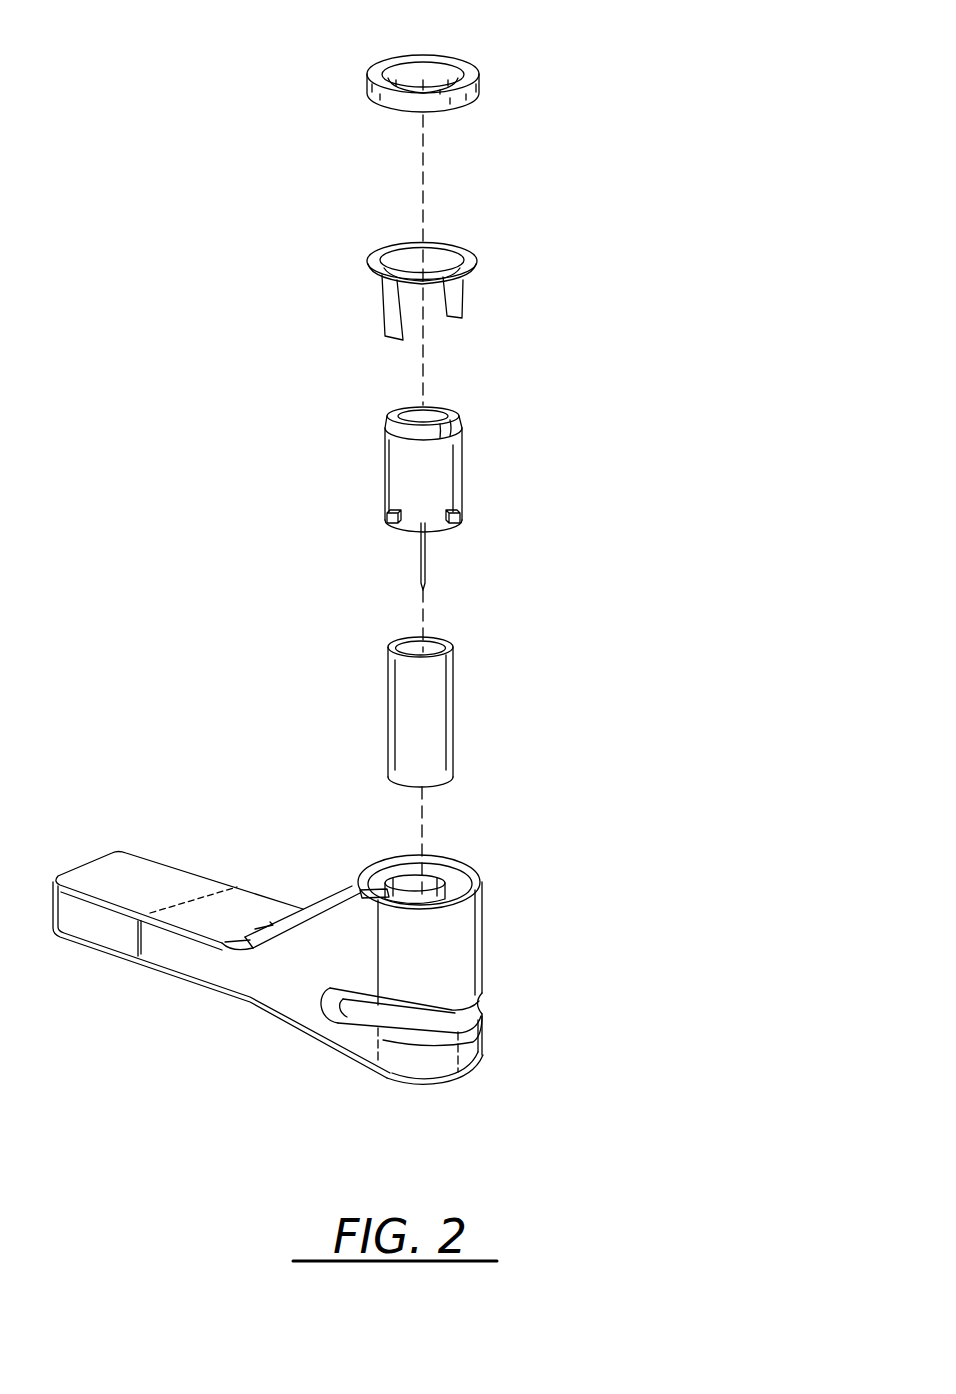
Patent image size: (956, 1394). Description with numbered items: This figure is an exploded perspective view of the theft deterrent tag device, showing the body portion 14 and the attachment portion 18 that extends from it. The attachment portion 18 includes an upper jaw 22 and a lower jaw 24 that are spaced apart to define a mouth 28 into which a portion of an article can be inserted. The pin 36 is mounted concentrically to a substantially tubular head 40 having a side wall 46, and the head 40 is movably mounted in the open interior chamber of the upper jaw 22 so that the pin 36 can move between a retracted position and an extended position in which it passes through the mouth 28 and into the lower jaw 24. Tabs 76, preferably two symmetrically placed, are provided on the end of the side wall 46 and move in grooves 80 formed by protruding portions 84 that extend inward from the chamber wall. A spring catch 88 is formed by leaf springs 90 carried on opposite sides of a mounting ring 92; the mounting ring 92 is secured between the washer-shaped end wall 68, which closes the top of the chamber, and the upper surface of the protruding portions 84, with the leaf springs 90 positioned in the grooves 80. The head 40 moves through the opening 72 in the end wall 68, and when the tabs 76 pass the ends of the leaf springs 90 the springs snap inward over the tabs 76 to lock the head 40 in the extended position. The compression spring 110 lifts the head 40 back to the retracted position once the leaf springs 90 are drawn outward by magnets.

The body portion 14 is at (168, 876).
The attachment portion 18 is at (328, 902).
The upper jaw 22 is at (493, 904).
The lower jaw 24 is at (482, 1050).
The mouth 28 is at (480, 1012).
The pin 36 is at (425, 563).
The head 40 is at (439, 512).
The side wall 46 is at (458, 478).
The end wall 68 is at (478, 88).
The opening 72 is at (460, 72).
The tabs 76 is at (385, 515).
The grooves 80 is at (458, 888).
The protruding portions 84 is at (430, 882).
The spring catch 88 is at (435, 291).
The leaf springs 90 is at (387, 313).
The mounting ring 92 is at (380, 258).
The compression spring 110 is at (445, 722).